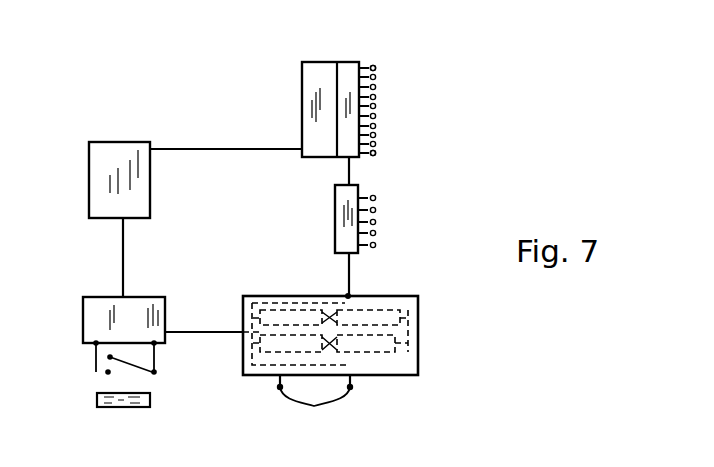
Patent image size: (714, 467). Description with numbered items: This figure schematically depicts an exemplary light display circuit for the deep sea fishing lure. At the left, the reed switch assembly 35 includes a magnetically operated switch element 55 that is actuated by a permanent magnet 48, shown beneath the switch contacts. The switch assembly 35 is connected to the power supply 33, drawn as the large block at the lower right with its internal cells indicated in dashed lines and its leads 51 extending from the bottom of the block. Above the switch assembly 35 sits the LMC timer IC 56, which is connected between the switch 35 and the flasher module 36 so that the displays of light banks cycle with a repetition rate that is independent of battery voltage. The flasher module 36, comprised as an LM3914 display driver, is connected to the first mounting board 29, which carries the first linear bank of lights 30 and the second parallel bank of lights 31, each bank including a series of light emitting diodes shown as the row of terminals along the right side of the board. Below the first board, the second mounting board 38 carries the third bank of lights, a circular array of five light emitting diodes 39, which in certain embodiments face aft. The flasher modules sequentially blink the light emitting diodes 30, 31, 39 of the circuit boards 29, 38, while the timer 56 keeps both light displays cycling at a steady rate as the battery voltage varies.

The first mounting board 29 is at (346, 81).
The first linear bank of lights 30 is at (376, 90).
The second parallel bank of lights 31 is at (343, 62).
The power supply 33 is at (410, 363).
The reed switch assembly 35 is at (92, 315).
The flasher module 36 is at (315, 100).
The second mounting board 38 is at (352, 190).
The light emitting diodes 39 is at (376, 222).
The permanent magnet 48 is at (125, 407).
The actuator leads 51 is at (315, 405).
The magnetically operated switch element 55 is at (96, 372).
The LMC timer IC 56 is at (95, 177).